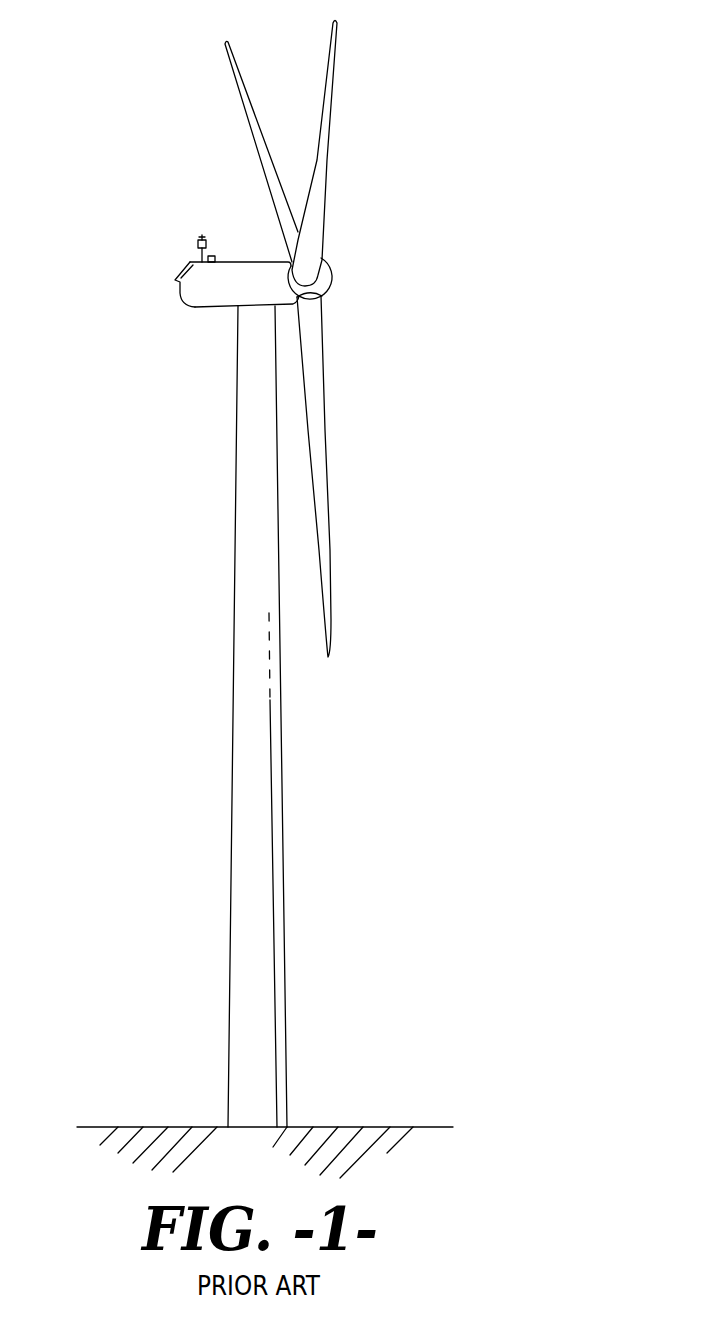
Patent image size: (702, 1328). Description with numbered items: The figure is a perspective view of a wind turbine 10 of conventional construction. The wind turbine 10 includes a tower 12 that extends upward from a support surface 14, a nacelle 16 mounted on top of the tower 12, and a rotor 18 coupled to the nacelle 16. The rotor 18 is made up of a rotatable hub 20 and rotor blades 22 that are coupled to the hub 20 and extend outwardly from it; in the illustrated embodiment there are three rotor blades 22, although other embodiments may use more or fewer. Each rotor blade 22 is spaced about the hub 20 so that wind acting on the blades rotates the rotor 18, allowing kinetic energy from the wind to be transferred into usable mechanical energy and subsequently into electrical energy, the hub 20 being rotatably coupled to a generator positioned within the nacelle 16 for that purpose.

The wind turbine 10 is at (491, 61).
The tower 12 is at (243, 828).
The support surface 14 is at (158, 1127).
The nacelle 16 is at (215, 308).
The rotor 18 is at (328, 328).
The rotatable hub 20 is at (328, 292).
The rotor blade 22 is at (322, 67).